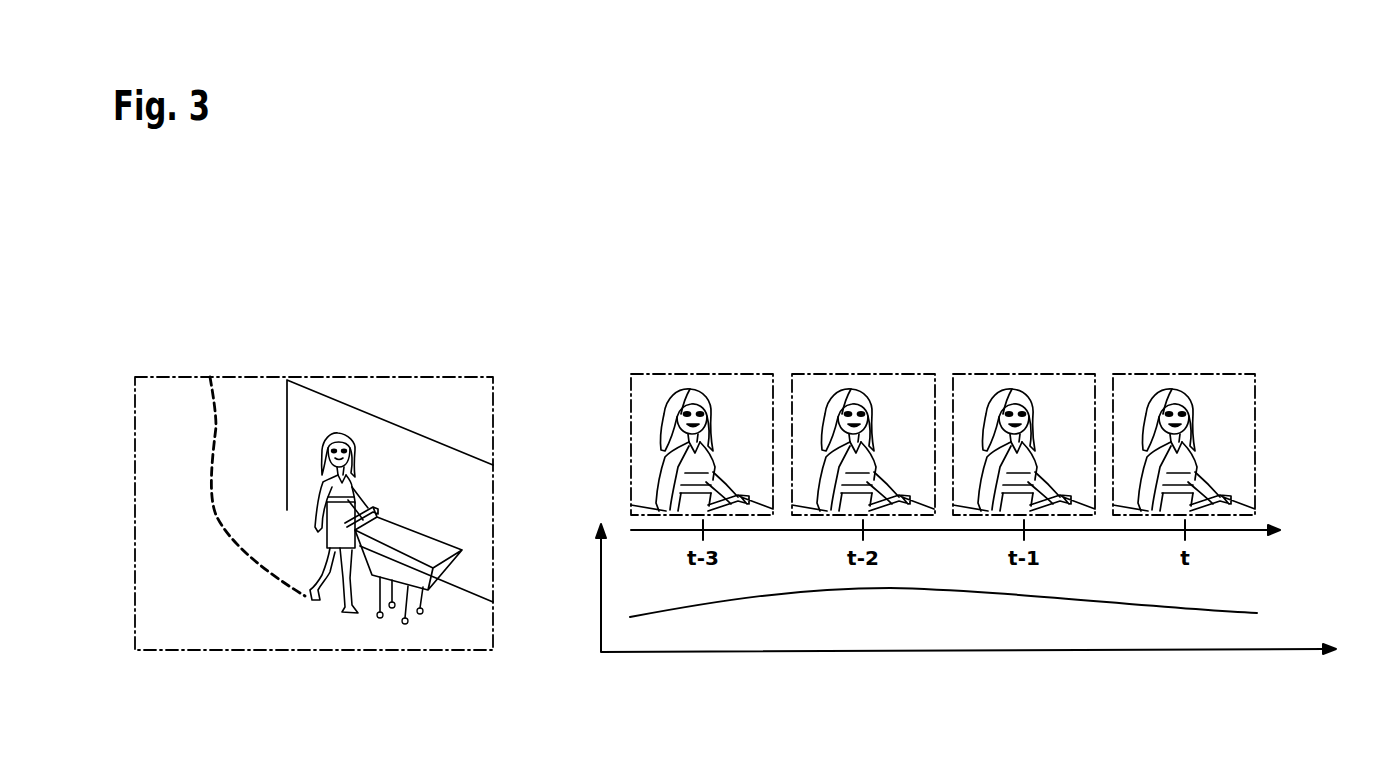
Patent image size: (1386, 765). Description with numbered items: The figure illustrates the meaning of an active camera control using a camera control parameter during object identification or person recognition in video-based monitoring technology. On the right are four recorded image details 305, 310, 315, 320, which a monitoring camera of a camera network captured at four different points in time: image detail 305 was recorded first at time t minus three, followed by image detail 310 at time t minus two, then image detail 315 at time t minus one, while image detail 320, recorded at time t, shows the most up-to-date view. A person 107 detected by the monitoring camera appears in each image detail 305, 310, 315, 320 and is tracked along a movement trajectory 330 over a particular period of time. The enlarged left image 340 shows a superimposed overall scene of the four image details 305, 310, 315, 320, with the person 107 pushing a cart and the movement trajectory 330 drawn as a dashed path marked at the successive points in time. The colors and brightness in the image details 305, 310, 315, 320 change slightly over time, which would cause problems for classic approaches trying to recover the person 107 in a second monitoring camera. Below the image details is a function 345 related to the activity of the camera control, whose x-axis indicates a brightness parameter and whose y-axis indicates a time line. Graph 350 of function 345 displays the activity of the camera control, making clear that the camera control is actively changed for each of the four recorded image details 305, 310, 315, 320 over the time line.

The person 107 is at (354, 440).
The image detail 305 is at (638, 374).
The image detail 310 is at (798, 374).
The image detail 315 is at (959, 374).
The image detail 320 is at (1119, 374).
The movement trajectory 330 is at (216, 427).
The enlarged left image 340 is at (457, 377).
The function 345 is at (586, 494).
The graph 350 is at (1240, 612).